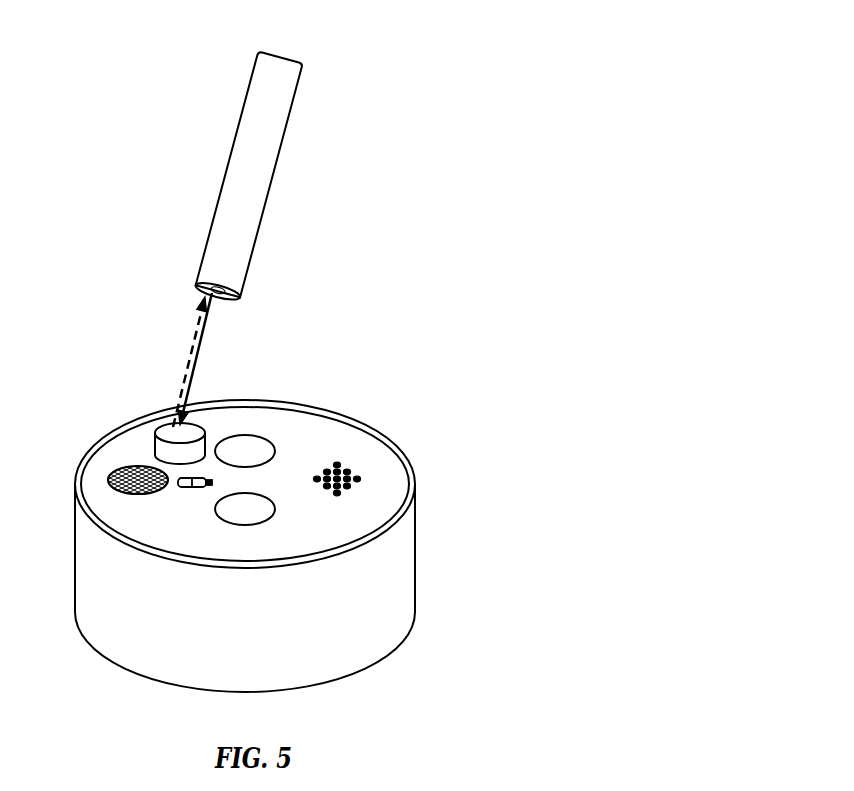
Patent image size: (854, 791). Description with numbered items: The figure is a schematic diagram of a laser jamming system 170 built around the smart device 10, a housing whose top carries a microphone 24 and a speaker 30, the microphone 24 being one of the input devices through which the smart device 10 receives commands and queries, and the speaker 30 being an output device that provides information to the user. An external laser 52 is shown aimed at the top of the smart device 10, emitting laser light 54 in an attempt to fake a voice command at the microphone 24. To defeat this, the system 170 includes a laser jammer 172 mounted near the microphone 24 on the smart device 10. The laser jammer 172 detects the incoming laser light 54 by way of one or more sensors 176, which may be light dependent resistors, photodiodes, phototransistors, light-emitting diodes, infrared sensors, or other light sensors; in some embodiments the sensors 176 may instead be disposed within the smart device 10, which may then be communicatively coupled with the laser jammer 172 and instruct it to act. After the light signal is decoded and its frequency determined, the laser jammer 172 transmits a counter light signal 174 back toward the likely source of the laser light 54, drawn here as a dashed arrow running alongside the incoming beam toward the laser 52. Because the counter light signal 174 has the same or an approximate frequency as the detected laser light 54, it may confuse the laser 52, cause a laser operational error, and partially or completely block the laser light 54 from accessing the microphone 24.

The laser jamming system 170 is at (434, 44).
The laser 52 is at (225, 173).
The laser light 54 is at (202, 365).
The counter light signal 174 is at (197, 343).
The sensors 176 is at (163, 423).
The laser jammer 172 is at (163, 445).
The microphone 24 is at (135, 494).
The speaker 30 is at (340, 464).
The smart device 10 is at (415, 556).